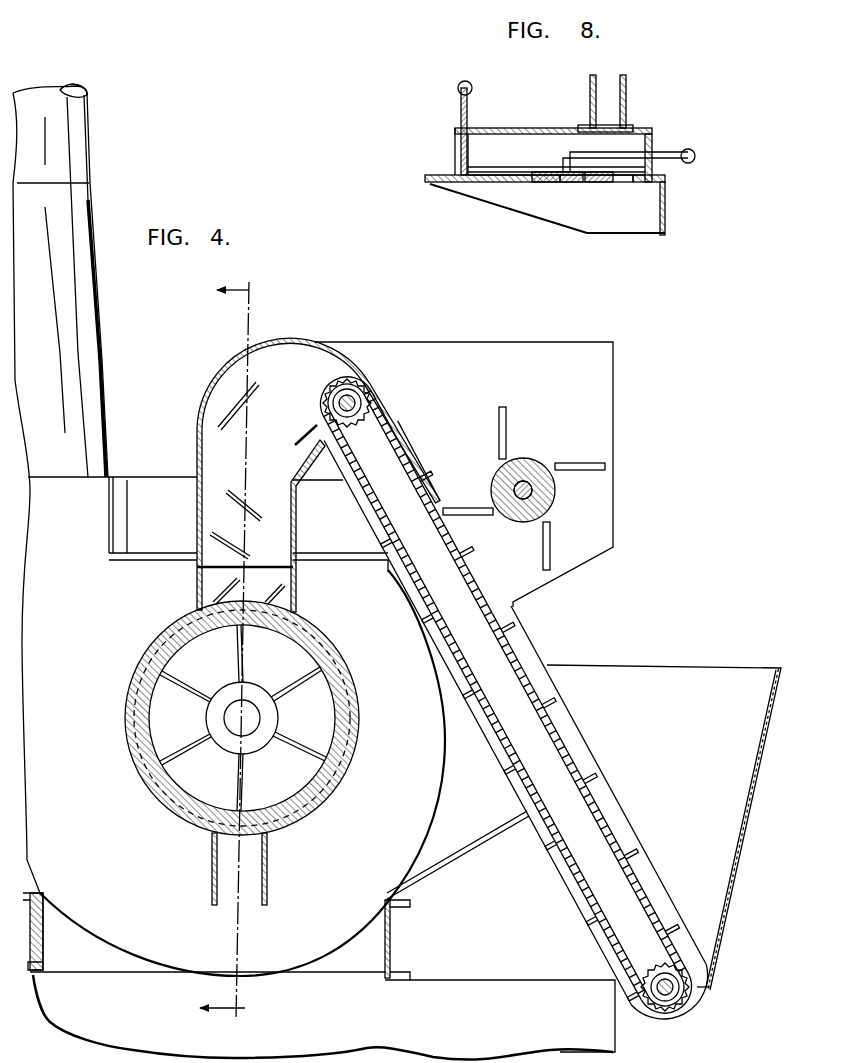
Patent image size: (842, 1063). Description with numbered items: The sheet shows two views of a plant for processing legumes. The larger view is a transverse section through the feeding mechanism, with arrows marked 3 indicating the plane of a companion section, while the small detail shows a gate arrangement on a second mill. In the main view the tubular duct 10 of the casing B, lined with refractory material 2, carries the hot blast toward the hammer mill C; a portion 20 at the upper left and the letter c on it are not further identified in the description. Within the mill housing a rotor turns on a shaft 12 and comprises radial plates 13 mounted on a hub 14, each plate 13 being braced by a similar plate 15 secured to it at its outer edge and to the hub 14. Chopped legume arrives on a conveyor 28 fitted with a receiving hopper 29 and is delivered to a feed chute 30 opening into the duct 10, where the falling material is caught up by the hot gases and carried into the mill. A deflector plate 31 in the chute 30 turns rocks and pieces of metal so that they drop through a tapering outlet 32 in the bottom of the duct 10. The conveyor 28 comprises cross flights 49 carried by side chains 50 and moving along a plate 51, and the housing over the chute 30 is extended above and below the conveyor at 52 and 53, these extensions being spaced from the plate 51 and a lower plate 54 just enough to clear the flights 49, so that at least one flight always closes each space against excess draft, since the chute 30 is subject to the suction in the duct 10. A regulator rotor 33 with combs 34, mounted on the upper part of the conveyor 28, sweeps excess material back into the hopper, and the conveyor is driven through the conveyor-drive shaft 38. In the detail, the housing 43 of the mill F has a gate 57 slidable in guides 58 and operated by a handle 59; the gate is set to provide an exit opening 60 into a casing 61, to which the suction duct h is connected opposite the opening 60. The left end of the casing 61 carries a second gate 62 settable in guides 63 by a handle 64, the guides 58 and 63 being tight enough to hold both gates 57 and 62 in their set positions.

In FIG. 4, the refractory material 2 is at (325, 745).
In FIG. 4, the section line 3 is at (234, 651).
In FIG. 4, the tubular duct 10 is at (193, 782).
In FIG. 4, the shaft 12 is at (232, 733).
In FIG. 4, the plates 13 is at (284, 703).
In FIG. 4, the hub 14 is at (252, 685).
In FIG. 4, the bracing plate 15 is at (196, 690).
In FIG. 4, the duct 20 is at (98, 320).
In FIG. 4, the conveyor 28 is at (487, 593).
In FIG. 4, the receiving hopper 29 is at (698, 676).
In FIG. 4, the feed chute 30 is at (218, 592).
In FIG. 4, the deflector plate 31 is at (263, 502).
In FIG. 4, the tapering outlet 32 is at (213, 870).
In FIG. 4, the rotor 33 is at (492, 490).
In FIG. 4, the combs 34 is at (553, 548).
In FIG. 4, the conveyor-drive shaft 38 is at (333, 405).
In FIG. 8, the housing 43 is at (665, 220).
In FIG. 4, the cross flights 49 is at (517, 652).
In FIG. 4, the side chains 50 is at (585, 786).
In FIG. 4, the plate 51 is at (638, 878).
In FIG. 4, the housing extension 52 is at (413, 443).
In FIG. 4, the housing extension 53 is at (367, 523).
In FIG. 4, the lower plate 54 is at (460, 648).
In FIG. 8, the gate 57 is at (576, 184).
In FIG. 8, the guides 58 is at (492, 170).
In FIG. 8, the operating handle 59 is at (688, 149).
In FIG. 8, the exit opening 60 is at (623, 183).
In FIG. 8, the casing 61 is at (512, 129).
In FIG. 8, the gate 62 is at (461, 110).
In FIG. 8, the guides 63 is at (455, 153).
In FIG. 8, the handle 64 is at (472, 86).
In FIG. 4, the casing B is at (108, 720).
In FIG. 4, the hammer mill C is at (182, 397).
In FIG. 4, the duct c is at (90, 150).
In FIG. 8, the suction duct h is at (625, 108).
In FIG. 8, the mill F is at (514, 224).